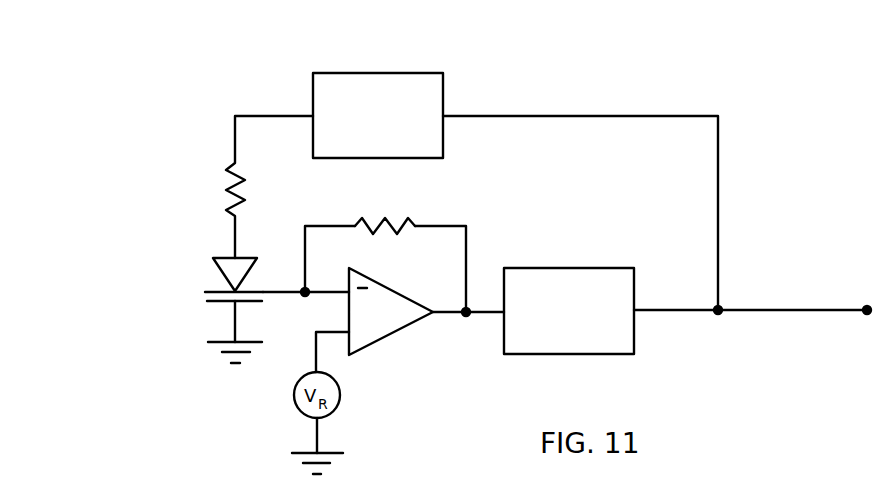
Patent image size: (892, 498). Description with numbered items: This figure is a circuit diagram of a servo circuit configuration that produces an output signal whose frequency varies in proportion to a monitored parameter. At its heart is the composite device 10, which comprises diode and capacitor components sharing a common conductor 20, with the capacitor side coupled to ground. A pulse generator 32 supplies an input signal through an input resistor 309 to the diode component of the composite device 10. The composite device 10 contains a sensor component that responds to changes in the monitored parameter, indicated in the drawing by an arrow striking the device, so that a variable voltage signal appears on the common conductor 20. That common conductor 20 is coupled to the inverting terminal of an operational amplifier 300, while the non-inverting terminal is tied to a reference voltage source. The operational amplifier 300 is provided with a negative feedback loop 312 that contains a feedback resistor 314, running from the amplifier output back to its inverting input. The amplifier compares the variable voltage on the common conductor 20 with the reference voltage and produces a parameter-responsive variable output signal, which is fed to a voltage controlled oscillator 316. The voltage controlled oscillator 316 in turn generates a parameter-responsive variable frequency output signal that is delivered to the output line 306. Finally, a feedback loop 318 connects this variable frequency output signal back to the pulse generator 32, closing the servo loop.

The pulse generator 32 is at (377, 73).
The feedback loop 318 is at (600, 116).
The input resistor 309 is at (232, 172).
The composite device 10 is at (264, 240).
The common conductor 20 is at (273, 292).
The operational amplifier 300 is at (388, 322).
The feedback resistor 314 is at (385, 217).
The negative feedback loop 312 is at (440, 226).
The voltage controlled oscillator 316 is at (577, 268).
The output line 306 is at (800, 310).